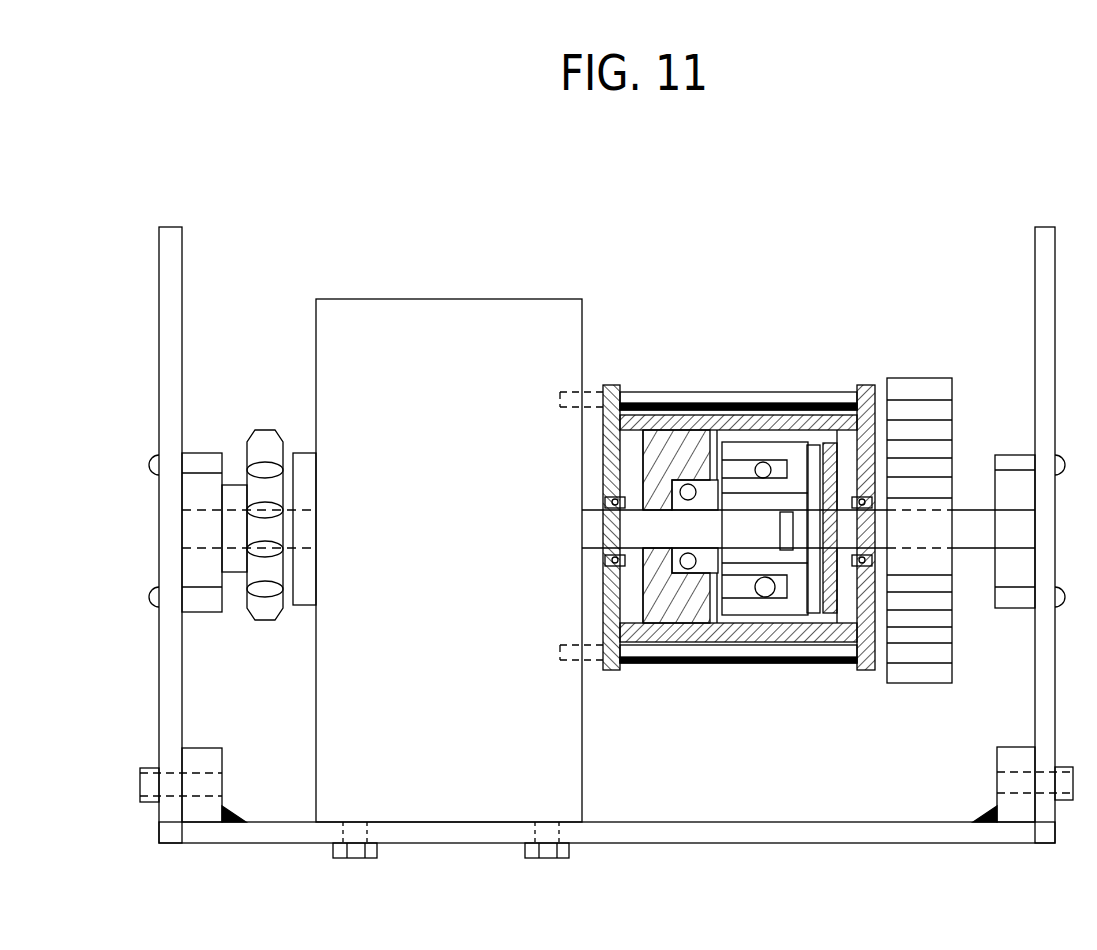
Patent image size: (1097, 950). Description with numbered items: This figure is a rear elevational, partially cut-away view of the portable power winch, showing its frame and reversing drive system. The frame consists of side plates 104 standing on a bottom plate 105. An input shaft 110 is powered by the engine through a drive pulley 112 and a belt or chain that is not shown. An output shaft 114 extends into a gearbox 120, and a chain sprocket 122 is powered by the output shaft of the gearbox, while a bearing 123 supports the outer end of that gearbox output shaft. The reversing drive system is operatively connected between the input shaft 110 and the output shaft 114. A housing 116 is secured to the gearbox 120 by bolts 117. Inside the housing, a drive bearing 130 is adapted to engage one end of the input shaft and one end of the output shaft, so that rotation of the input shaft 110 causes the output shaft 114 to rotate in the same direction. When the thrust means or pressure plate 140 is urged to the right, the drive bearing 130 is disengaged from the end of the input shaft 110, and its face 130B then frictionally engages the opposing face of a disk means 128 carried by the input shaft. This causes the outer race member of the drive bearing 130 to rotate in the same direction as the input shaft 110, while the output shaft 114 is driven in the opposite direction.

The side plates 104 is at (158, 294).
The bottom plate 105 is at (270, 835).
The shaft 110 is at (978, 510).
The drive pulley 112 is at (925, 683).
The output shaft 114 is at (592, 525).
The housing 116 is at (693, 392).
The bolts 117 is at (720, 392).
The gearbox 120 is at (514, 299).
The chain sprocket 122 is at (268, 428).
The bearing 123 is at (205, 453).
The disk means 128 is at (835, 392).
The drive bearing 130 is at (752, 601).
The face 130B is at (806, 616).
The pressure plate 140 is at (677, 606).